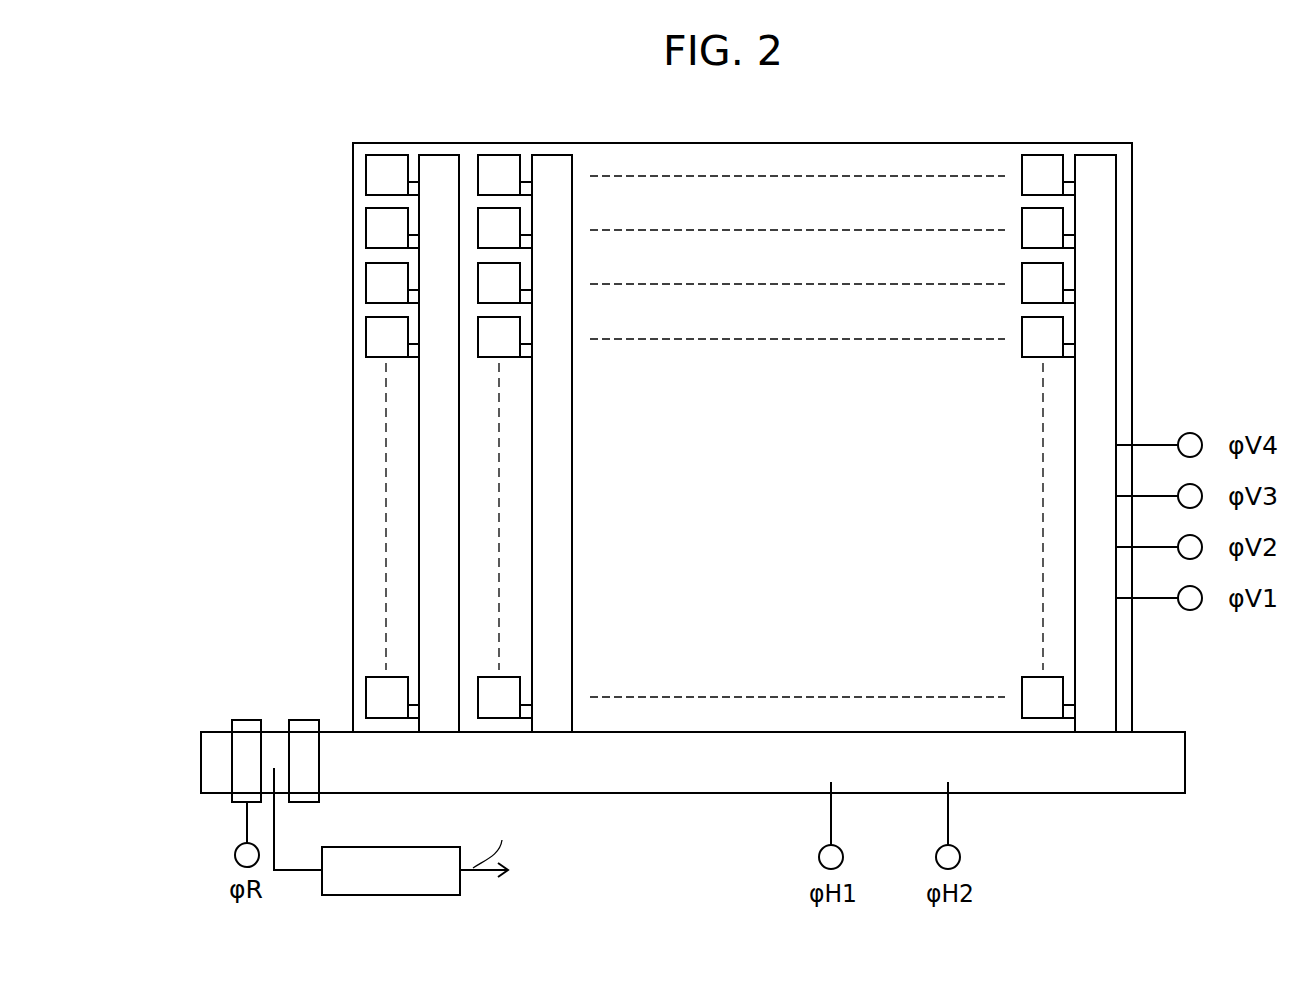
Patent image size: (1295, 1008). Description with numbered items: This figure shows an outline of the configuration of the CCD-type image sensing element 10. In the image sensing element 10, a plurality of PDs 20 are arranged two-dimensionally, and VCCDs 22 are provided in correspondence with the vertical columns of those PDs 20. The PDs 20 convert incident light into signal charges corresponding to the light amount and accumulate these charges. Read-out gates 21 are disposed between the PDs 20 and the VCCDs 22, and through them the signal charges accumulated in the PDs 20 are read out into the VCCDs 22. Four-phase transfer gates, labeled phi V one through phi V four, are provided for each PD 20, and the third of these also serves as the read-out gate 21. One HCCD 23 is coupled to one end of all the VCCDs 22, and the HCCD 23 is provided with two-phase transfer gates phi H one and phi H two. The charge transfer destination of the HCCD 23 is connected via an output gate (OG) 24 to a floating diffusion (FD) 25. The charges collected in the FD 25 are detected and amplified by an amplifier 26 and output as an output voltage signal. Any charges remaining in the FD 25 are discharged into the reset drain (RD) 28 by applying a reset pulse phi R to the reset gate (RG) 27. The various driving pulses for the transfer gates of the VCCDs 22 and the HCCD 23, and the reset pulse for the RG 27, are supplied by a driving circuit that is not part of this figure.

The CCD-type image sensing element 10 is at (252, 98).
The PD 20 is at (378, 153).
The read-out gate 21 is at (410, 182).
The VCCD 22 is at (453, 155).
The HCCD 23 is at (1148, 795).
The output gate (OG) 24 is at (303, 720).
The floating diffusion (FD) 25 is at (277, 732).
The amplifier 26 is at (460, 885).
The reset gate (RG) 27 is at (248, 720).
The reset drain (RD) 28 is at (217, 732).